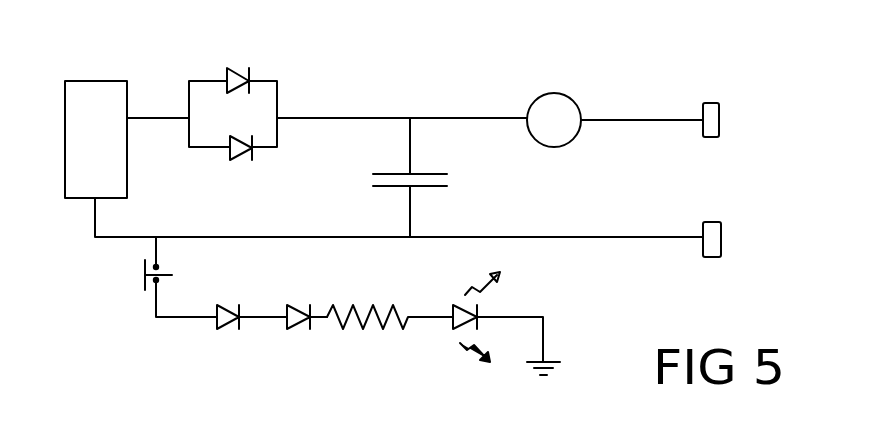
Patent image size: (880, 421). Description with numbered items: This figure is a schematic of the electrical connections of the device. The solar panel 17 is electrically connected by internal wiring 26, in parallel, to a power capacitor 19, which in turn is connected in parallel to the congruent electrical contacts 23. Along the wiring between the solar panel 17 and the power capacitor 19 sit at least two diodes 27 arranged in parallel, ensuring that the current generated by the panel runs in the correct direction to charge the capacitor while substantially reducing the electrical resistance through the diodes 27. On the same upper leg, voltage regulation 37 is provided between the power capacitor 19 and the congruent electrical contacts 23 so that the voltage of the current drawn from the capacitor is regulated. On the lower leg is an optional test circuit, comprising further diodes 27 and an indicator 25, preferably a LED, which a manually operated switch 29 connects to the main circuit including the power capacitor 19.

The solar panel 17 is at (90, 81).
The diode 27 is at (240, 48).
The internal wiring 26 is at (428, 118).
The voltage regulation 37 is at (540, 100).
The congruent electrical contacts 23 is at (719, 120).
The power capacitor 19 is at (440, 186).
The switch 29 is at (143, 278).
The indicator 25 is at (453, 330).